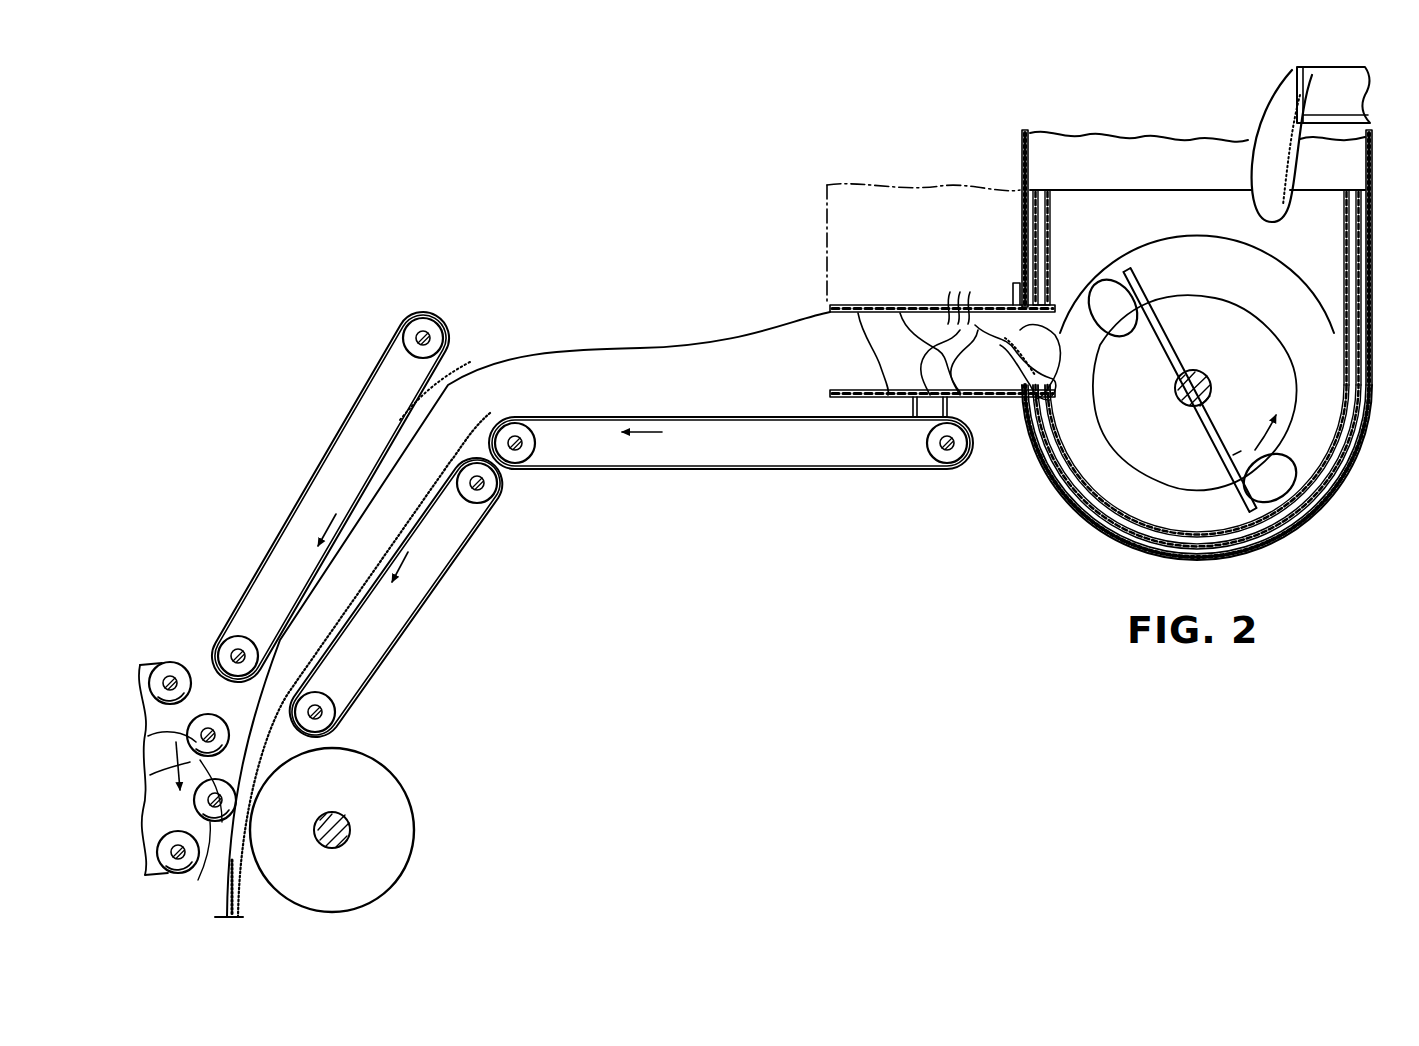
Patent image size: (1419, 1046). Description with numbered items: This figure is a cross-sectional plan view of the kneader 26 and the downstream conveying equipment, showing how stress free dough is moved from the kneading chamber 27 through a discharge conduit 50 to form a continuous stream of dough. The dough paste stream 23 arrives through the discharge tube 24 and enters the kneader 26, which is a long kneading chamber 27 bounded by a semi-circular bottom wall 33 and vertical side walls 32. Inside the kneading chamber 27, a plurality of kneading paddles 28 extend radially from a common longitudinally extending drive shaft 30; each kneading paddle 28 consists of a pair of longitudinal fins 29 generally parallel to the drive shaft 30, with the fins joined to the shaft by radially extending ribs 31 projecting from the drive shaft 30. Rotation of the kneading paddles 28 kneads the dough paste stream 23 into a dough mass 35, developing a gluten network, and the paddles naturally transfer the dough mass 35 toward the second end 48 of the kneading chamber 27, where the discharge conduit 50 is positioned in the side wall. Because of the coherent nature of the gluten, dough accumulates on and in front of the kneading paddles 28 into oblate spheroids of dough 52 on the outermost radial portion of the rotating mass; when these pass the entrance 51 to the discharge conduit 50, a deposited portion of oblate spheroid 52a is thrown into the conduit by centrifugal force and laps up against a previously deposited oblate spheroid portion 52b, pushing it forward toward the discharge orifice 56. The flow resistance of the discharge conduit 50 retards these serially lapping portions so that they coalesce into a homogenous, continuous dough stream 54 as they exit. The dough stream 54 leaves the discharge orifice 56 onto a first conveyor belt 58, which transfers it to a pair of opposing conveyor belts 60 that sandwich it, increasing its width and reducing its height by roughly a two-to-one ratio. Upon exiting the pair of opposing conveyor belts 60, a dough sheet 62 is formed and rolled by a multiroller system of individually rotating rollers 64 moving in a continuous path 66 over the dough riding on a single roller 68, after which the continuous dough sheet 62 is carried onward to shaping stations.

The dough paste stream 23 is at (1272, 100).
The discharge tube 24 is at (1342, 109).
The kneader 26 is at (1018, 157).
The kneading chamber 27 is at (1082, 524).
The kneading paddle 28 is at (1180, 336).
The longitudinal fin 29 is at (1147, 264).
The drive shaft 30 is at (1212, 386).
The radially extending rib 31 is at (1218, 434).
The vertical side wall 32 is at (1022, 200).
The semi-circular bottom wall 33 is at (1248, 548).
The dough mass 35 is at (1255, 256).
The second end 48 is at (1070, 236).
The discharge conduit 50 is at (915, 306).
The entrance 51 is at (1045, 324).
The oblate spheroid of dough 52 is at (1130, 340).
The deposited portion of oblate spheroid 52a is at (1049, 369).
The previously deposited oblate spheroid portion 52b is at (969, 296).
The dough stream 54 is at (630, 391).
The discharge orifice 56 is at (822, 308).
The first conveyor belt 58 is at (540, 460).
The pair of opposing conveyor belts 60 is at (318, 478).
The dough sheet 62 is at (240, 906).
The individually rotating rollers 64 is at (150, 740).
The continuous path 66 is at (152, 780).
The single roller 68 is at (400, 800).